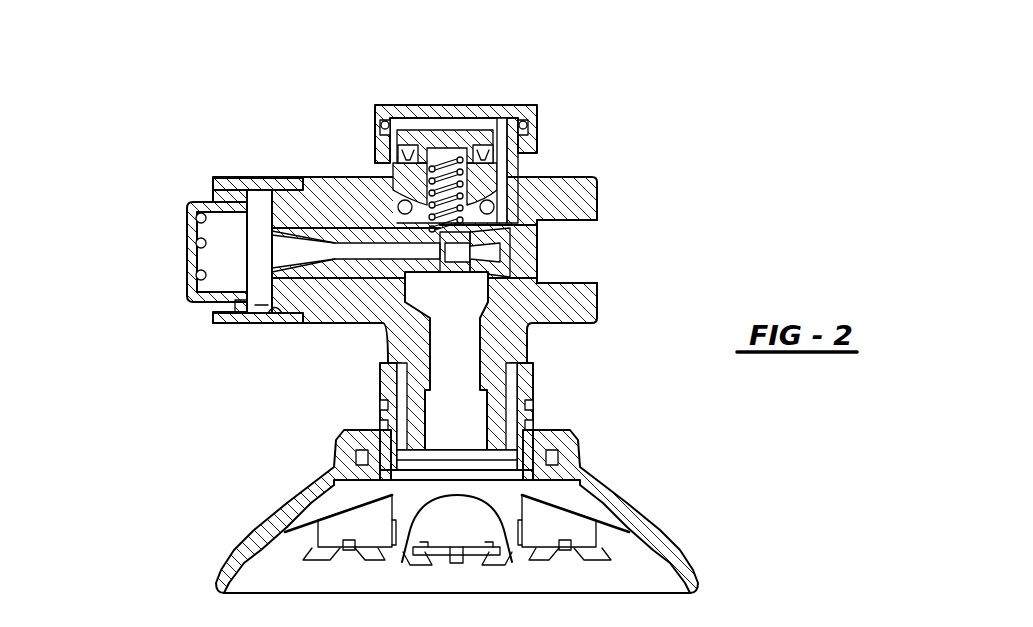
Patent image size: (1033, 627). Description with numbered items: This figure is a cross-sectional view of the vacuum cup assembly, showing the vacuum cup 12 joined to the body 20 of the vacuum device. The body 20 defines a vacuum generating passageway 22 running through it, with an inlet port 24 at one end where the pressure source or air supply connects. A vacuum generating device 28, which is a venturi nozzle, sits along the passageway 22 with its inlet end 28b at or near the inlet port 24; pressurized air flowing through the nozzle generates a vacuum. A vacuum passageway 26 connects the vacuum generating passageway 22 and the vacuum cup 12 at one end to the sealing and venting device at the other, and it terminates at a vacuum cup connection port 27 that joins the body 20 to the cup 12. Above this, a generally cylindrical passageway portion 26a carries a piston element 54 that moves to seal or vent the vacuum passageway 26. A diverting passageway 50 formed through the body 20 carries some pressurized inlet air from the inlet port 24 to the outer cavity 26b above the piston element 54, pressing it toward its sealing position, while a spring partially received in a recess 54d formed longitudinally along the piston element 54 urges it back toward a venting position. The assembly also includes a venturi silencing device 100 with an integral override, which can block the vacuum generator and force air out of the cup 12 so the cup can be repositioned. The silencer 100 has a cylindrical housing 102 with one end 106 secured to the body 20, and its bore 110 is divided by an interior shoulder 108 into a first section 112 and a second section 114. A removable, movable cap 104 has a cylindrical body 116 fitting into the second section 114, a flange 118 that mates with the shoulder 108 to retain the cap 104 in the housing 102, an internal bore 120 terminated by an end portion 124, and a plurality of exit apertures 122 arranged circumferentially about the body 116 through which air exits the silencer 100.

The venturi silencing device 100 is at (191, 92).
The housing 102 is at (285, 232).
The removable cap 104 is at (167, 226).
The end 106 is at (297, 185).
The interior shoulder 108 is at (237, 318).
The bore 110 is at (270, 304).
The first section 112 is at (263, 318).
The second section 114 is at (222, 296).
The cylindrical body 116 is at (211, 200).
The flange 118 is at (243, 200).
The internal bore 120 is at (205, 298).
The exit apertures 122 is at (201, 276).
The end portion 124 is at (188, 260).
The vacuum cup 12 is at (658, 556).
The body 20 is at (573, 190).
The vacuum generating passageway 22 is at (573, 265).
The inlet port 24 is at (583, 281).
The vacuum passageway 26 is at (475, 406).
The passageway portion 26a is at (493, 131).
The outer cavity 26b is at (463, 126).
The vacuum cup connection port 27 is at (490, 437).
The vacuum generating device 28 is at (378, 265).
The inlet end 28b is at (510, 237).
The diverting passageway 50 is at (512, 147).
The piston element 54 is at (427, 122).
The recess 54d is at (463, 184).